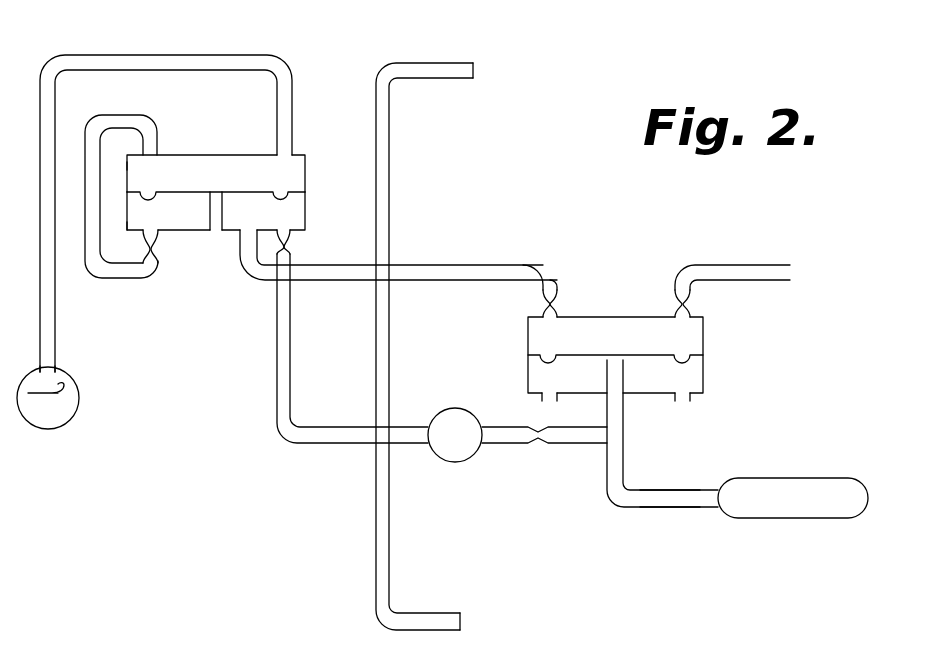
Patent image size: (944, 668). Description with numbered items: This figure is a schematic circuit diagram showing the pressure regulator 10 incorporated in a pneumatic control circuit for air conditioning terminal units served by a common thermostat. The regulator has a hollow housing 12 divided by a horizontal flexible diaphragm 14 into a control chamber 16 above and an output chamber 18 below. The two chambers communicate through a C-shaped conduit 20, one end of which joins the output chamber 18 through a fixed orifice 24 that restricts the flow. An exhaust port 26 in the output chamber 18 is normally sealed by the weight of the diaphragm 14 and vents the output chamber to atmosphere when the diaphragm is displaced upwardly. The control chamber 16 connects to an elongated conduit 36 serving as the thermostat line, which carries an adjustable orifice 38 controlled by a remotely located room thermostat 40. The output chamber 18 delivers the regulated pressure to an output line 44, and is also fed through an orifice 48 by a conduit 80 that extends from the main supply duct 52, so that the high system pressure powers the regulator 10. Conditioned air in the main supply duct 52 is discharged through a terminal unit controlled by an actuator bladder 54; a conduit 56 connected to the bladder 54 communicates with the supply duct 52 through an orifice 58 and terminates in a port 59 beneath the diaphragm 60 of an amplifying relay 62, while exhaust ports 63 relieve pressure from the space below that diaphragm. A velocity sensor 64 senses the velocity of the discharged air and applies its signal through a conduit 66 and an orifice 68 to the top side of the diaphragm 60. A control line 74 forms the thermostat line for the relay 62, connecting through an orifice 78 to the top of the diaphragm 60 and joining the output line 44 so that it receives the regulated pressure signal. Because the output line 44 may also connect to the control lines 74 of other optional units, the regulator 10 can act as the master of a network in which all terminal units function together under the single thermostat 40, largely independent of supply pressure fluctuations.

The pressure regulator 10 is at (320, 158).
The hollow housing 12 is at (217, 154).
The flexible diaphragm 14 is at (178, 190).
The control chamber 16 is at (138, 169).
The output chamber 18 is at (132, 233).
The C-shaped conduit 20 is at (118, 278).
The fixed orifice 24 is at (153, 254).
The exhaust port 26 is at (216, 226).
The elongated conduit 36 is at (172, 57).
The adjustable orifice 38 is at (53, 372).
The room thermostat 40 is at (77, 398).
The output line 44 is at (352, 281).
The orifice 48 is at (290, 243).
The main supply duct 52 is at (443, 418).
The bladder 54 is at (782, 516).
The conduit 56 is at (620, 494).
The orifice 58 is at (540, 446).
The port 59 is at (615, 376).
The diaphragm 60 is at (646, 354).
The amplifying relay 62 is at (653, 355).
The exhaust ports 63 is at (545, 400).
The velocity sensor 64 is at (848, 305).
The conduit 66 is at (732, 263).
The orifice 68 is at (677, 284).
The control line 74 is at (434, 72).
The orifice 78 is at (553, 285).
The conduit 80 is at (293, 362).